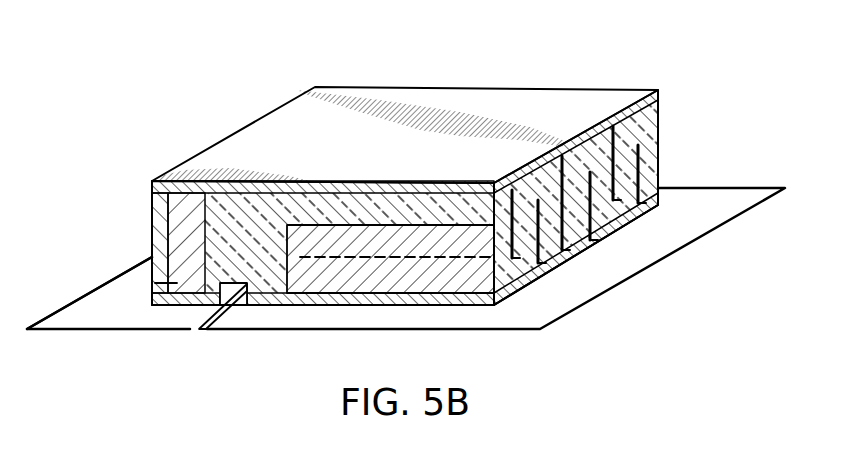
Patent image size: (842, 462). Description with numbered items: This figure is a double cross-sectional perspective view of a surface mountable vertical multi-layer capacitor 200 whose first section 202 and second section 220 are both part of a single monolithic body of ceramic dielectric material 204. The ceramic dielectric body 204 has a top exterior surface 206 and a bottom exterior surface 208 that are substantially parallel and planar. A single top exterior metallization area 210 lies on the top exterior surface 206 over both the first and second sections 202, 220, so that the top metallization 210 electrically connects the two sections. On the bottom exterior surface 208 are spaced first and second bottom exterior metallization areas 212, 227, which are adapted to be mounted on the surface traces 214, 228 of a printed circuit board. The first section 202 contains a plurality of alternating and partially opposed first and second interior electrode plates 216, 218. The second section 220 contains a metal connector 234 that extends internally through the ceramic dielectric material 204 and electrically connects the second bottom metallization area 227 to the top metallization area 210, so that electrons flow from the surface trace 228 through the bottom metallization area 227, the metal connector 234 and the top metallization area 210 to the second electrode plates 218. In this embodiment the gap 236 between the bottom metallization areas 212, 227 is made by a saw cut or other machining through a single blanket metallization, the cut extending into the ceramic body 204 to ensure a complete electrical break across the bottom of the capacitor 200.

The capacitor 200 is at (180, 40).
The first section 202 is at (724, 116).
The ceramic dielectric material body 204 is at (660, 118).
The top exterior surface 206 is at (372, 185).
The bottom exterior surface 208 is at (163, 307).
The top exterior metallization area 210 is at (470, 90).
The first bottom exterior metallization area 212 is at (660, 204).
The surface trace 214 is at (757, 196).
The first interior electrode plates 216 is at (660, 160).
The second interior electrode plates 218 is at (405, 300).
The second section 220 is at (120, 215).
The second bottom exterior metallization area 227 is at (172, 307).
The surface trace 228 is at (55, 320).
The metal connector 234 is at (177, 283).
The gap 236 is at (233, 312).